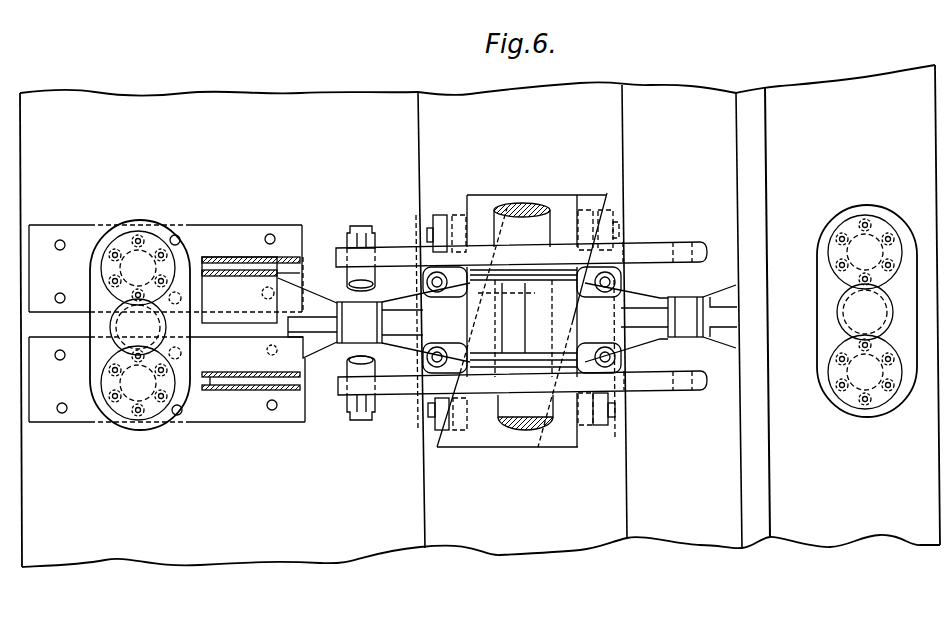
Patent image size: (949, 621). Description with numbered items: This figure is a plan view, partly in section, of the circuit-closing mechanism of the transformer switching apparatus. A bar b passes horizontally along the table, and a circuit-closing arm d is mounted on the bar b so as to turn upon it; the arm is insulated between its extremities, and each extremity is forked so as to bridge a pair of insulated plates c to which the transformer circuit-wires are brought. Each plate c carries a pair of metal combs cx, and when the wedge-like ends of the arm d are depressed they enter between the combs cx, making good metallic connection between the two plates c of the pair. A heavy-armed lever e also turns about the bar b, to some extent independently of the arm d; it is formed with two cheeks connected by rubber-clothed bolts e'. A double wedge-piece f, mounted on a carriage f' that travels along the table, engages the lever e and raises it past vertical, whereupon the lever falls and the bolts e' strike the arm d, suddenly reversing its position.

The bar b is at (531, 207).
The plates c is at (167, 325).
The metal combs cx is at (300, 258).
The circuit-closing arm d is at (507, 320).
The heavy-armed lever e is at (521, 318).
The bolts e' is at (370, 323).
The double wedge-piece f is at (499, 327).
The carriage f' is at (598, 332).